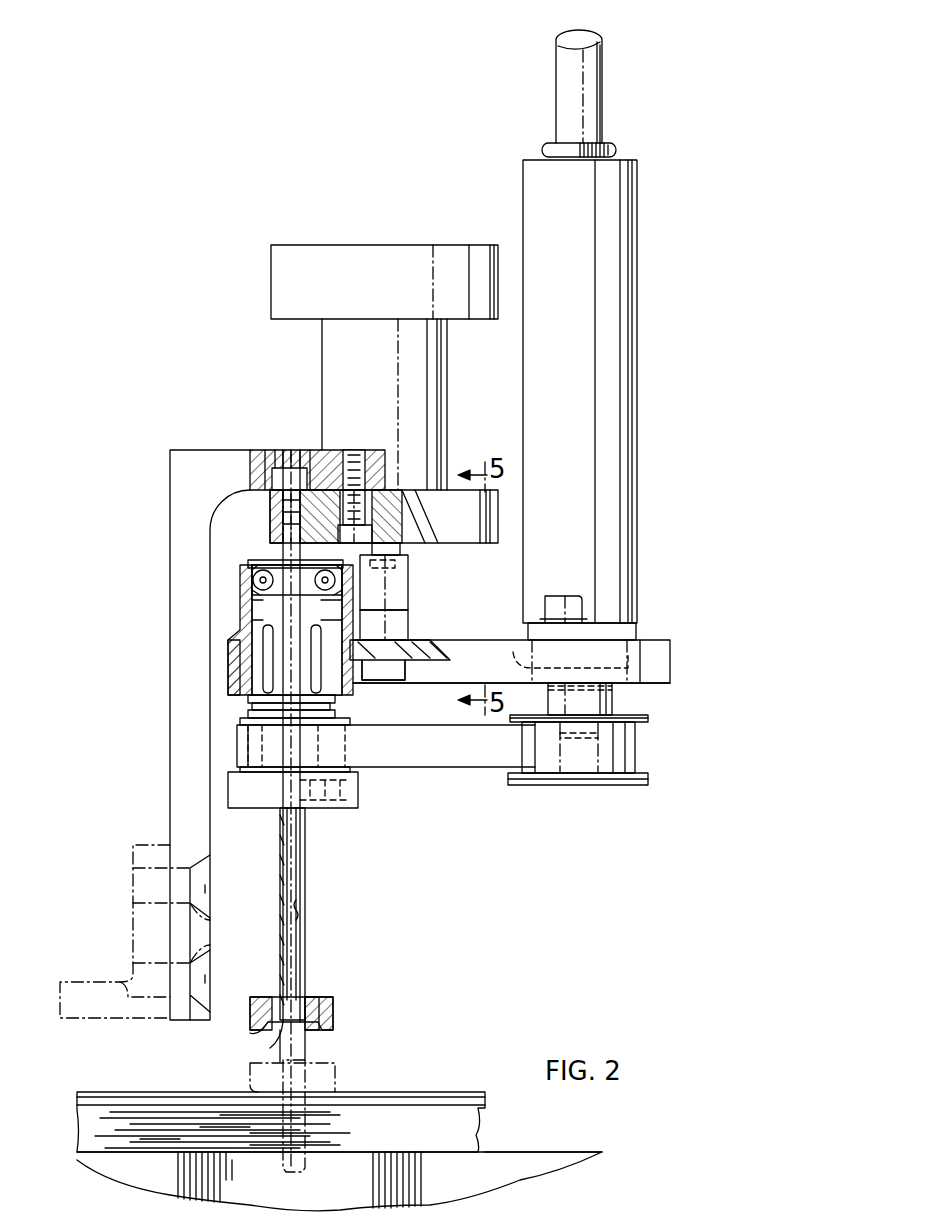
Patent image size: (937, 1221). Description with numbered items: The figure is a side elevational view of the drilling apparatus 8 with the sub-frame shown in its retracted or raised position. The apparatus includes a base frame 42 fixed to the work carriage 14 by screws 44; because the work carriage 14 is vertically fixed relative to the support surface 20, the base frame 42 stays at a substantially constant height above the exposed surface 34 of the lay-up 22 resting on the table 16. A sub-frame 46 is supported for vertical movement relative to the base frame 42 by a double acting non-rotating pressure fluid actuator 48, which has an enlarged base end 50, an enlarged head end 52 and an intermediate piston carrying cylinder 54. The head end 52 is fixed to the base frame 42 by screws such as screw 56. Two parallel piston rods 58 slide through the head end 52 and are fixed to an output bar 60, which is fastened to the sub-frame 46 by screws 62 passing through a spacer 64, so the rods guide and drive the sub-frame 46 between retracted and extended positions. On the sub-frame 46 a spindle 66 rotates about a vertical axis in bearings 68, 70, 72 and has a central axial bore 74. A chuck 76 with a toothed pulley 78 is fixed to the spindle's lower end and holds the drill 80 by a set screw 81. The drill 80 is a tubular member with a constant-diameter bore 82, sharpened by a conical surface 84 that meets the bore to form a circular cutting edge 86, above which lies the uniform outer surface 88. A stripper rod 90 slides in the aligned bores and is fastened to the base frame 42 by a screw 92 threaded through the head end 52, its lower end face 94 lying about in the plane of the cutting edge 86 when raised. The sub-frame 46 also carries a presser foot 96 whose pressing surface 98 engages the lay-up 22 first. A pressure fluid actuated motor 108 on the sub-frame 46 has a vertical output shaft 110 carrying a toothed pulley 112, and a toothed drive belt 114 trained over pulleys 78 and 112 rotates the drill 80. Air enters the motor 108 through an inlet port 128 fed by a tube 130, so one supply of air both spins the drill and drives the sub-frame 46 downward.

The drilling apparatus 8 is at (228, 322).
The work carriage 14 is at (133, 945).
The table 16 is at (478, 1172).
The support surface 20 is at (516, 1152).
The lay-up 22 is at (95, 1120).
The exposed surface 34 is at (165, 1092).
The base frame 42 is at (170, 565).
The screws 44 is at (192, 937).
The sub-frame 46 is at (665, 655).
The pressure fluid actuator 48 is at (320, 357).
The base end 50 is at (368, 266).
The head end 52 is at (270, 505).
The cylinder 54 is at (338, 394).
The screw 56 is at (370, 530).
The piston rods 58 is at (400, 548).
The output bar 60 is at (408, 582).
The screws 62 is at (383, 676).
The spacer 64 is at (400, 627).
The spindle 66 is at (265, 606).
The bearing 68 is at (258, 570).
The bearing 70 is at (268, 645).
The bearing 72 is at (255, 706).
The central axial bore 74 is at (260, 590).
The chuck 76 is at (340, 808).
The toothed pulley 78 is at (345, 724).
The drill 80 is at (300, 858).
The set screw 81 is at (352, 770).
The bore 82 is at (300, 908).
The conical surface 84 is at (318, 1000).
The cutting edge 86 is at (310, 1032).
The outer surface 88 is at (280, 948).
The stripper rod 90 is at (285, 831).
The screw 92 is at (305, 478).
The lower end face 94 is at (290, 1040).
The presser foot 96 is at (335, 1008).
The pressing surface 98 is at (255, 1035).
The pressure fluid actuated motor 108 is at (625, 206).
The output shaft 110 is at (558, 664).
The toothed pulley 112 is at (640, 785).
The toothed drive belt 114 is at (636, 746).
The inlet port 128 is at (612, 148).
The tube 130 is at (603, 85).